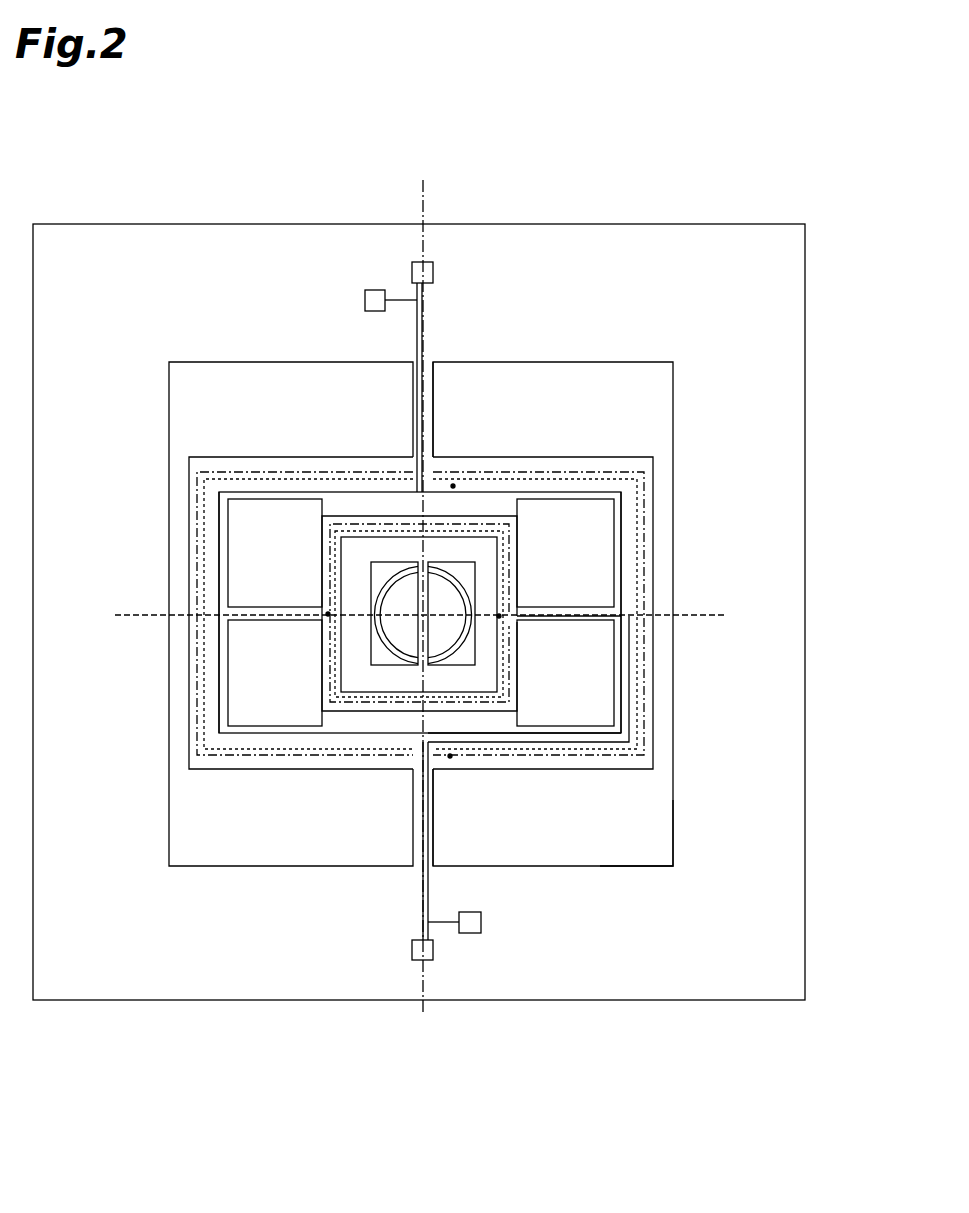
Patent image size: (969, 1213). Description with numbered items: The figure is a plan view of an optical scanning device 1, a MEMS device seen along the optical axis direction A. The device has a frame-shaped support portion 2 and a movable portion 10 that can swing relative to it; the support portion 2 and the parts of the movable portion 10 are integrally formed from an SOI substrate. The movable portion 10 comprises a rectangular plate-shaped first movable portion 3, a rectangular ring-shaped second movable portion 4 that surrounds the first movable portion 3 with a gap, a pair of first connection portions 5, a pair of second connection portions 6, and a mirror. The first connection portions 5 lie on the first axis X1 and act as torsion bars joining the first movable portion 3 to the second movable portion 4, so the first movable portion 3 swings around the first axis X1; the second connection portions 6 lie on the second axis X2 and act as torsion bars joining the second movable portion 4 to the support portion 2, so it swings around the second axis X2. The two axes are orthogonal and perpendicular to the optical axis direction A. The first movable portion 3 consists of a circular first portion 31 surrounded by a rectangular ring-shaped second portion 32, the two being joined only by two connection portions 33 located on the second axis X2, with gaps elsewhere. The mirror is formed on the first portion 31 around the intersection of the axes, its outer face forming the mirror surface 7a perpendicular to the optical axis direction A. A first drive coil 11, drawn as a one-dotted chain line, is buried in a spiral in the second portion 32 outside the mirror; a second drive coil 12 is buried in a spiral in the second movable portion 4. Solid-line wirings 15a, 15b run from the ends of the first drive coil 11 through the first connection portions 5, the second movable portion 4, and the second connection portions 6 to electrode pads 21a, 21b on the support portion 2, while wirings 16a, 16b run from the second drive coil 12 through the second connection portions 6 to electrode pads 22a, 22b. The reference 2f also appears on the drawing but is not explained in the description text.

The optical scanning device 1 is at (668, 145).
The support portion 2 is at (190, 1000).
The surface of substrate 2f is at (642, 866).
The first movable portion 3 is at (421, 612).
The second movable portion 4 is at (262, 770).
The first connection portions 5 is at (272, 605).
The second connection portions 6 is at (433, 410).
The mirror surface 7a is at (450, 635).
The movable portion 10 is at (538, 393).
The first drive coil 11 is at (362, 711).
The second drive coil 12 is at (548, 769).
The wiring 15a is at (219, 540).
The wiring 15b is at (621, 683).
The wiring 16a is at (417, 332).
The wiring 16b is at (428, 888).
The electrode pad 21a is at (425, 258).
The electrode pad 21b is at (432, 975).
The electrode pad 22a is at (365, 300).
The electrode pad 22b is at (482, 922).
The first portion 31 is at (465, 577).
The second portion 32 is at (322, 538).
The connection portions 33 is at (423, 563).
The optical axis direction A is at (330, 688).
The first axis X1 is at (708, 612).
The second axis X2 is at (423, 1008).